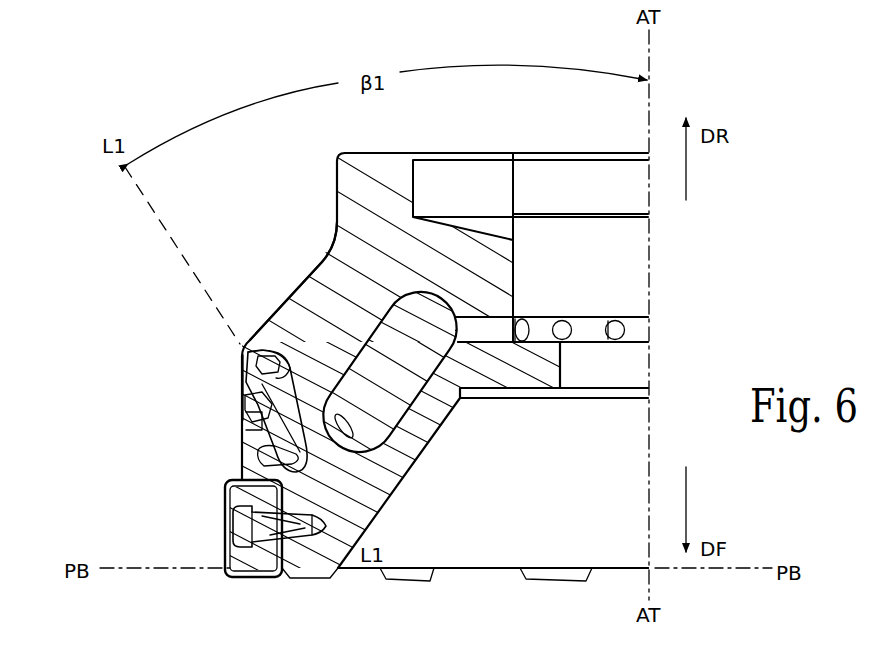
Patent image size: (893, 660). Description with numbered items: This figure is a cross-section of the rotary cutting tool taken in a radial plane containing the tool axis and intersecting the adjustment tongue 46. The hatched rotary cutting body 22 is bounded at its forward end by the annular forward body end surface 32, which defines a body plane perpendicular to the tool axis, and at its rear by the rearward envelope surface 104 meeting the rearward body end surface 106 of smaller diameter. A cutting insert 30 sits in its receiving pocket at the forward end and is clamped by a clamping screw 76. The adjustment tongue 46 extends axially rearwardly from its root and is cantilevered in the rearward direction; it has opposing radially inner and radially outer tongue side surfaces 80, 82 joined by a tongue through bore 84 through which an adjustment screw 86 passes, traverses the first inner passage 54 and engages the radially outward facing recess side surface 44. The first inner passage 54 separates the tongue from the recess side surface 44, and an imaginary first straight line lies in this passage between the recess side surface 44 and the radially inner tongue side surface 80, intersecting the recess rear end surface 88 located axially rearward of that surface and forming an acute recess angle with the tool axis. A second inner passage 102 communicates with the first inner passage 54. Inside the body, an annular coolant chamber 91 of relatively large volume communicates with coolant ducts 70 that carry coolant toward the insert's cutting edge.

The rotary cutting body 22 is at (391, 279).
The cutting insert 30 is at (262, 555).
The forward body end surface 32 is at (465, 570).
The recess side surface 44 is at (352, 423).
The adjustment tongue 46 is at (242, 431).
The first inner passage 54 is at (300, 440).
The coolant duct 70 is at (358, 424).
The clamping screw 76 is at (252, 524).
The radially inner tongue side surface 80 is at (272, 353).
The radially outer tongue side surface 82 is at (242, 393).
The tongue through bore 84 is at (242, 416).
The adjustment screw 86 is at (242, 407).
The recess rear end surface 88 is at (242, 367).
The coolant chamber 91 is at (436, 346).
The second inner passage 102 is at (290, 458).
The rearward envelope surface 104 is at (322, 250).
The rearward body end surface 106 is at (370, 152).